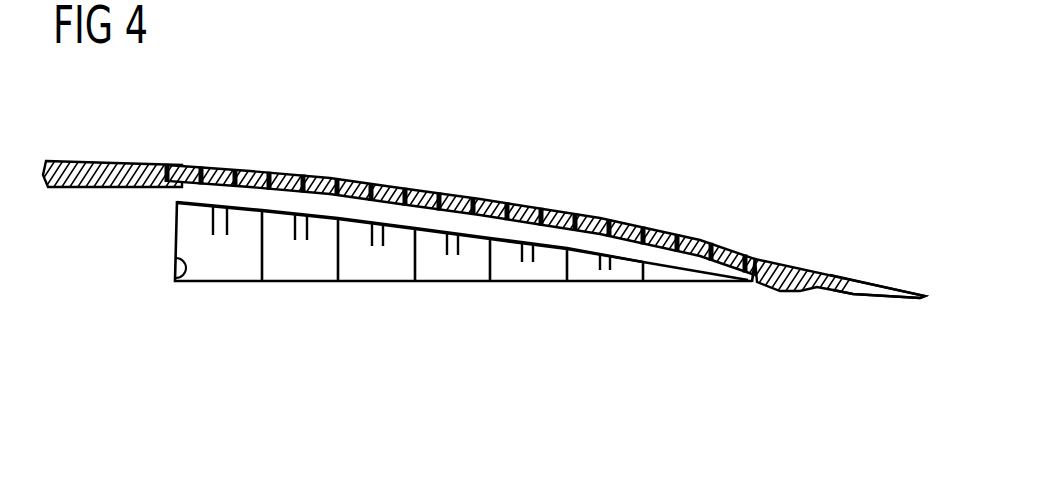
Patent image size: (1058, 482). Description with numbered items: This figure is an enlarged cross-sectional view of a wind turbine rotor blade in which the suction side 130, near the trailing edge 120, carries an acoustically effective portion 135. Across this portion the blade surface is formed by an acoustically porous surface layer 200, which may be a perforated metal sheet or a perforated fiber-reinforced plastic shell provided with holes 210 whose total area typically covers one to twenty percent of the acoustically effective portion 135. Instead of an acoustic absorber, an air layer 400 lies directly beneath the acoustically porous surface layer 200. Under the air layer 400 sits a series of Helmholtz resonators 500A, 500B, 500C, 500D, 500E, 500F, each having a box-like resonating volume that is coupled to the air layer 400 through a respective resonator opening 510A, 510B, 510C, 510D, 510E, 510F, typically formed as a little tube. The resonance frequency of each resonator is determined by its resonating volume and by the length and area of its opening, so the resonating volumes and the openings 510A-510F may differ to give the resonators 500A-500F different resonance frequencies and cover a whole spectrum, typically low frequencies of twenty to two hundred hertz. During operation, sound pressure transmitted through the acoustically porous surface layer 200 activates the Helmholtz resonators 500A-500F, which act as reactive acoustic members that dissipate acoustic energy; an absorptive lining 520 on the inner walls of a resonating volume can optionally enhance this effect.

The trailing edge 120 is at (827, 268).
The suction side 130 is at (123, 170).
The acoustically effective portion 135 is at (748, 97).
The acoustically porous surface layer 200 is at (707, 238).
The holes 210 is at (666, 220).
The air layer 400 is at (695, 260).
The Helmholtz resonator 500A is at (220, 268).
The Helmholtz resonator 500B is at (300, 270).
The Helmholtz resonator 500C is at (380, 267).
The Helmholtz resonator 500D is at (458, 263).
The Helmholtz resonator 500E is at (537, 267).
The Helmholtz resonator 500F is at (617, 270).
The resonator opening 510A is at (222, 215).
The resonator opening 510B is at (303, 220).
The resonator opening 510C is at (378, 227).
The resonator opening 510D is at (453, 237).
The resonator opening 510E is at (528, 245).
The resonator opening 510F is at (607, 255).
The absorptive lining 520 is at (177, 283).